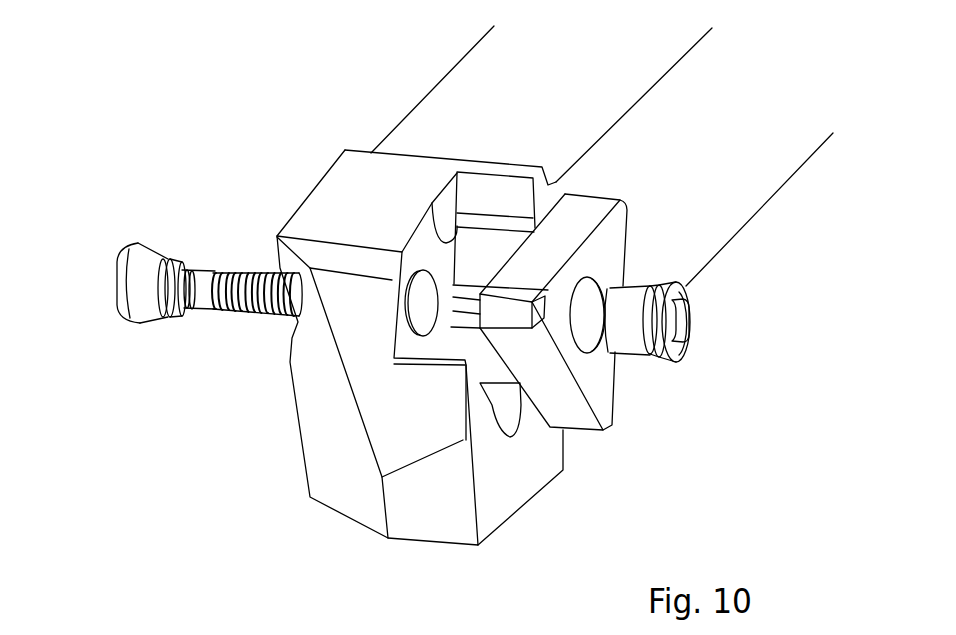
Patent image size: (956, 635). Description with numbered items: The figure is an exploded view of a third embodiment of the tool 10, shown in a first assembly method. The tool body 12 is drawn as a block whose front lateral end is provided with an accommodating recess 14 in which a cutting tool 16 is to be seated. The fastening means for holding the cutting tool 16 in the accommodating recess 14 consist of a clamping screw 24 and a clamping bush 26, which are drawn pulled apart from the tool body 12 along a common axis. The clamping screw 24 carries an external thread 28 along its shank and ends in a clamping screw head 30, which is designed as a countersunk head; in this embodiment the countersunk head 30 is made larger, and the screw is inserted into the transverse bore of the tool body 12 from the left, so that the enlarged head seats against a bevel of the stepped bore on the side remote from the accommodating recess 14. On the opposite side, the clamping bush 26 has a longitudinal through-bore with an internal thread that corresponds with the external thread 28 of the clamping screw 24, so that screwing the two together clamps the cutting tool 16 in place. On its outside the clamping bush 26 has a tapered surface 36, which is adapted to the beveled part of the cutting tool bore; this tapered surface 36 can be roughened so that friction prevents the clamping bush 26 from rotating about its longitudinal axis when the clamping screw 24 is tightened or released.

The tool 10 is at (404, 59).
The tool body 12 is at (310, 182).
The accommodating recess 14 is at (497, 367).
The cutting tool 16 is at (610, 440).
The clamping screw 24 is at (212, 267).
The clamping bush 26 is at (695, 303).
The external thread 28 is at (245, 313).
The clamping screw head 30 is at (148, 303).
The tapered surface 36 is at (655, 360).